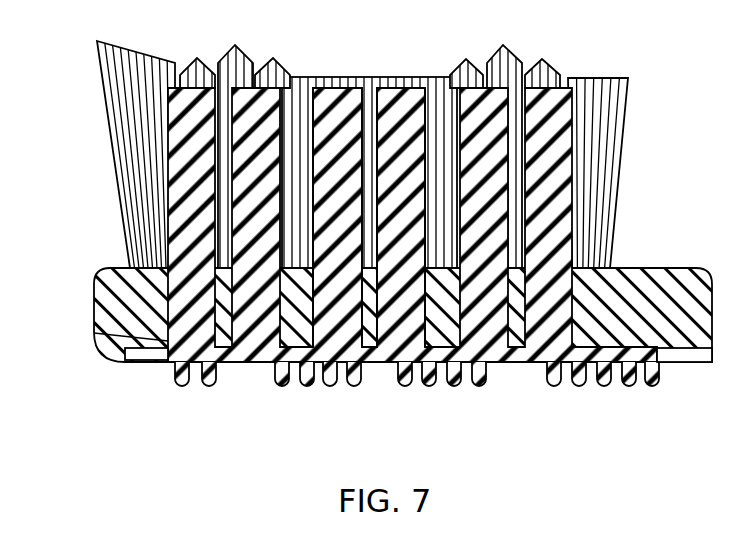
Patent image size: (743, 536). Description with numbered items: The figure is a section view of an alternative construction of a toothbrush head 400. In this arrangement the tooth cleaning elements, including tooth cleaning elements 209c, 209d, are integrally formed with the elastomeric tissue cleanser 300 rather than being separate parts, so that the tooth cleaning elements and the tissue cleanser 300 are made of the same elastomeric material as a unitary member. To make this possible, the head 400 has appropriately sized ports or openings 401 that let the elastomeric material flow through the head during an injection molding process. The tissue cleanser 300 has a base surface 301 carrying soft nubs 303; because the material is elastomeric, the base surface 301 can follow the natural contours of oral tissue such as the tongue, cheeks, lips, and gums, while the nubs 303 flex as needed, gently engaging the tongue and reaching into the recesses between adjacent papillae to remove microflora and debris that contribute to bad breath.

The head 400 is at (663, 85).
The ports or openings 401 is at (95, 333).
The tissue cleanser 300 is at (517, 362).
The base surface 301 is at (153, 363).
The nubs 303 is at (655, 383).
The tooth cleaning element 209c is at (339, 87).
The tooth cleaning element 209d is at (400, 87).